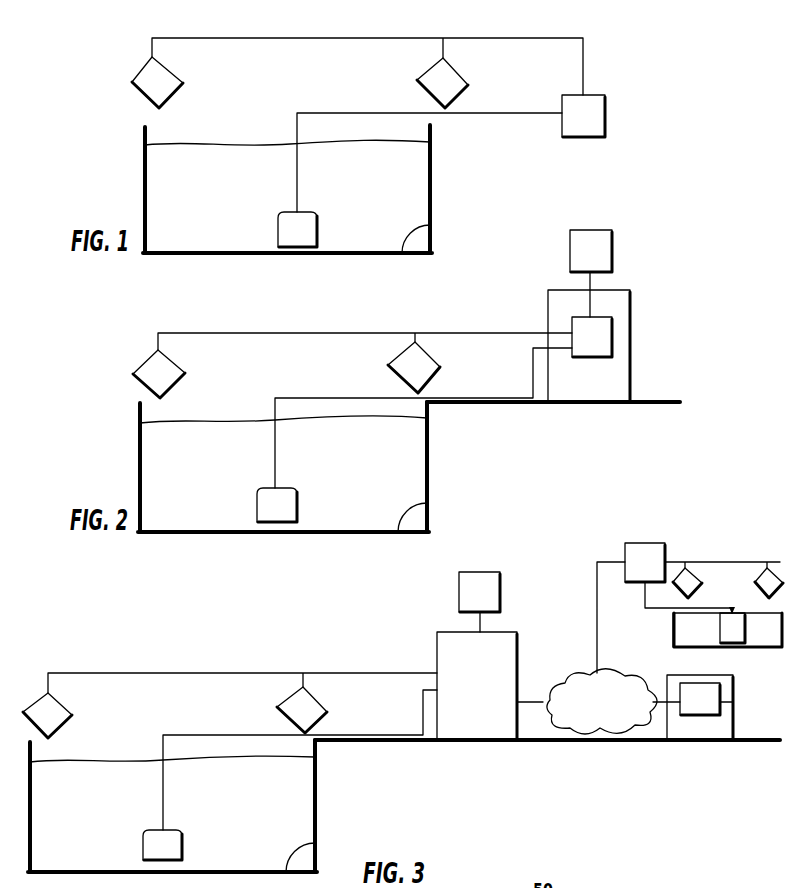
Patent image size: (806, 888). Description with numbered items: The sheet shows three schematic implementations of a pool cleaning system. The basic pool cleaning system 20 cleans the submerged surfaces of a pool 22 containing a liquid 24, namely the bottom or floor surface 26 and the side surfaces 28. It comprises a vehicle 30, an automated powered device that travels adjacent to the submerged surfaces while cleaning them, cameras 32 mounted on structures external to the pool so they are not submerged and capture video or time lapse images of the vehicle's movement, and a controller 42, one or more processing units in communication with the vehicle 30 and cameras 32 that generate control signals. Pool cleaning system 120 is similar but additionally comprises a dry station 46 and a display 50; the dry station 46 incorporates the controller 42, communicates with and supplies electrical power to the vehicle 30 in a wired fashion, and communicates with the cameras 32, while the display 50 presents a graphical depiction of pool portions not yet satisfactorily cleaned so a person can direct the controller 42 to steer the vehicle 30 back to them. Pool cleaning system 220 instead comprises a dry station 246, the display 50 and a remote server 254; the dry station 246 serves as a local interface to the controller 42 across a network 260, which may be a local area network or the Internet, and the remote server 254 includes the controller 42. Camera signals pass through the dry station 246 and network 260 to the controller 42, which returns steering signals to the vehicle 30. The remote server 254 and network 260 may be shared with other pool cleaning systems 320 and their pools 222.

In FIG. 1, the pool cleaning system 20 is at (616, 47).
In FIG. 1, the pool 22 is at (289, 185).
In FIG. 2, the pool 22 is at (409, 463).
In FIG. 3, the pool 22 is at (404, 804).
In FIG. 1, the liquid 24 is at (413, 141).
In FIG. 2, the liquid 24 is at (220, 420).
In FIG. 3, the liquid 24 is at (107, 760).
In FIG. 1, the bottom or floor surface 26 is at (430, 225).
In FIG. 2, the bottom or floor surface 26 is at (427, 503).
In FIG. 3, the bottom or floor surface 26 is at (315, 843).
In FIG. 1, the surfaces 28 is at (148, 200).
In FIG. 2, the surfaces 28 is at (426, 447).
In FIG. 3, the surfaces 28 is at (314, 790).
In FIG. 1, the vehicle 30 is at (280, 213).
In FIG. 2, the vehicle 30 is at (258, 490).
In FIG. 3, the vehicle 30 is at (145, 830).
In FIG. 1, the cameras 32 is at (141, 68).
In FIG. 2, the cameras 32 is at (176, 359).
In FIG. 3, the cameras 32 is at (65, 700).
In FIG. 1, the controller 42 is at (603, 95).
In FIG. 2, the controller 42 is at (612, 337).
In FIG. 3, the controller 42 is at (741, 692).
In FIG. 2, the dry station 46 is at (630, 312).
In FIG. 2, the display 50 is at (608, 230).
In FIG. 3, the display 50 is at (497, 572).
In FIG. 2, the pool cleaning system 120 is at (702, 354).
In FIG. 3, the pool cleaning system 220 is at (588, 545).
In FIG. 3, the pool 222 is at (673, 628).
In FIG. 3, the dry station 246 is at (517, 652).
In FIG. 3, the remote server 254 is at (733, 706).
In FIG. 3, the network 260 is at (585, 733).
In FIG. 3, the pool cleaning systems 320 is at (735, 552).